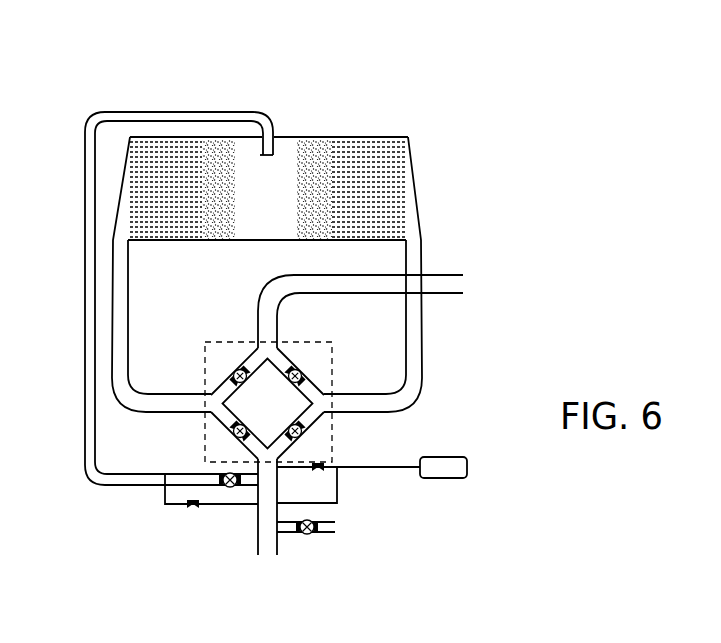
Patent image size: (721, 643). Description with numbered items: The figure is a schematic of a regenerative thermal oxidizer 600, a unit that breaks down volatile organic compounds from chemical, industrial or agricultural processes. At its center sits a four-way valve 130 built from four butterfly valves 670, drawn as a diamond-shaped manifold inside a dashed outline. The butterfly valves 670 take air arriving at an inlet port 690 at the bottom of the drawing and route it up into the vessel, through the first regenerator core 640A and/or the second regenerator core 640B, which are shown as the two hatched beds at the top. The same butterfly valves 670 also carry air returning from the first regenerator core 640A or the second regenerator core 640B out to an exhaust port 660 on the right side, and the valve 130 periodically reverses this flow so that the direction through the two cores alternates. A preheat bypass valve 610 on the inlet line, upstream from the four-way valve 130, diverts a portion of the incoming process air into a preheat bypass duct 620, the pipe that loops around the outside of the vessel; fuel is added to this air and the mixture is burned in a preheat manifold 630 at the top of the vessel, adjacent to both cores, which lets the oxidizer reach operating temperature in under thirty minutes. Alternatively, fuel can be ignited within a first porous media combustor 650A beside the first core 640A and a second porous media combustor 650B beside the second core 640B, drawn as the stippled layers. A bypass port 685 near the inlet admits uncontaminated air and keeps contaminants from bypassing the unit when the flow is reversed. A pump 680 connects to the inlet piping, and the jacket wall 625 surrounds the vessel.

The regenerative thermal oxidizer 600 is at (394, 59).
The preheat bypass valve 610 is at (223, 487).
The preheat bypass duct 620 is at (90, 440).
The vessel jacket wall 625 is at (120, 288).
The preheat manifold 630 is at (262, 153).
The first regenerator core 640A is at (173, 150).
The second regenerator core 640B is at (347, 150).
The first porous media combustor 650A is at (222, 172).
The second porous media combustor 650B is at (308, 218).
The exhaust port 660 is at (444, 285).
The four-way valve 130 is at (333, 358).
The butterfly valve 670 is at (300, 435).
The pump 680 is at (463, 447).
The bypass port 685 is at (337, 525).
The inlet port 690 is at (268, 553).